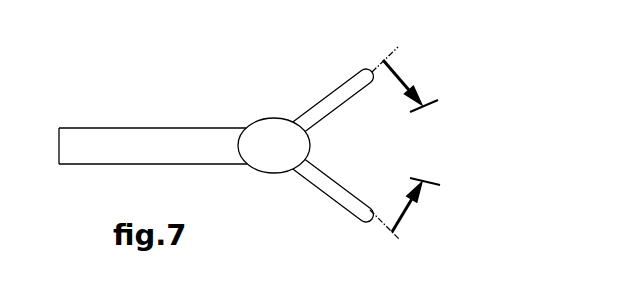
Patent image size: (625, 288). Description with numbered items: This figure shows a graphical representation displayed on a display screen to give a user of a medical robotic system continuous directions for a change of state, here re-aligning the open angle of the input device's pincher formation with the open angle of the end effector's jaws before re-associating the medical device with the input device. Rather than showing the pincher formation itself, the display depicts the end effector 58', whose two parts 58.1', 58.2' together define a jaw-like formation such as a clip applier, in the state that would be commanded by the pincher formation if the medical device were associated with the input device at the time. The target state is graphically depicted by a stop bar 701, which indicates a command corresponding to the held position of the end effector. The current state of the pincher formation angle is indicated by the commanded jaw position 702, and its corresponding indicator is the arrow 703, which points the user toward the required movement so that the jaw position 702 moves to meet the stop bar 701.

The end effector 58' is at (216, 143).
The first jaw part of the end effector 58.1' is at (319, 95).
The second jaw part of the end effector 58.2' is at (322, 199).
The stop bar 701 is at (430, 108).
The commanded jaw position 702 is at (381, 62).
The arrow 703 is at (396, 65).